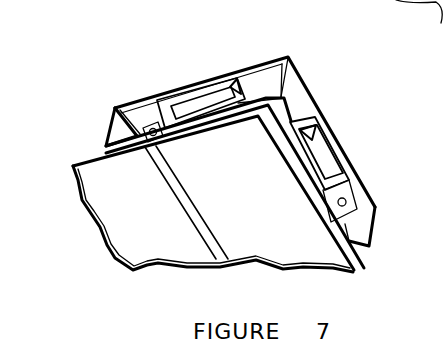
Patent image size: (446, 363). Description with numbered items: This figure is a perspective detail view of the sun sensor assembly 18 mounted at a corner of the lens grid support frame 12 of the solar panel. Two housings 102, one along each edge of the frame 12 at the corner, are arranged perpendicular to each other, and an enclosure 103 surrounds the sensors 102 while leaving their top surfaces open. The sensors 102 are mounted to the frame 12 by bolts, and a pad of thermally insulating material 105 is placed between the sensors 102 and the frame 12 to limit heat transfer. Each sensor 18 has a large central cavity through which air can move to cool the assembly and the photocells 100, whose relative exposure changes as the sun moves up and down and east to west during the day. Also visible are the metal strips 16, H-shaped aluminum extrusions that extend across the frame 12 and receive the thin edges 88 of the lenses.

The lens grid support frame 12 is at (85, 163).
The metal strips 16 is at (197, 223).
The sun sensor assembly 18 is at (170, 63).
The thin edges 88 is at (419, 23).
The photocells 100 is at (117, 110).
The housings 102 is at (163, 93).
The enclosure 103 is at (271, 55).
The pad of thermally insulating material 105 is at (248, 100).